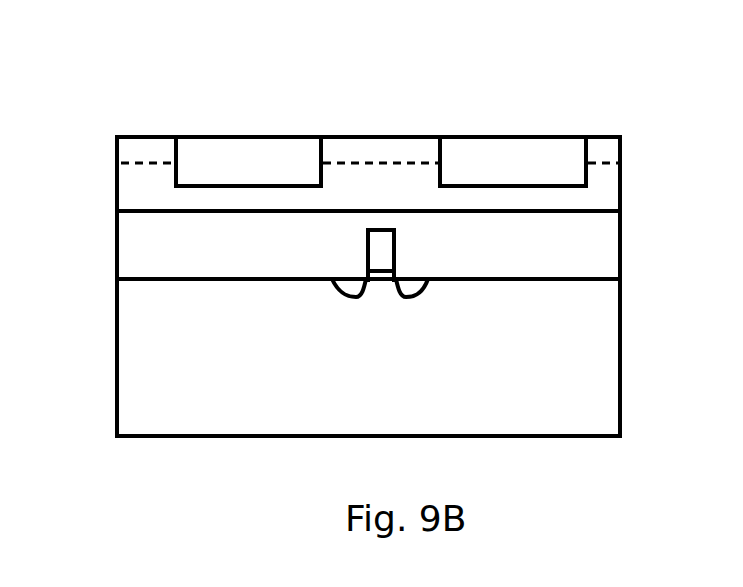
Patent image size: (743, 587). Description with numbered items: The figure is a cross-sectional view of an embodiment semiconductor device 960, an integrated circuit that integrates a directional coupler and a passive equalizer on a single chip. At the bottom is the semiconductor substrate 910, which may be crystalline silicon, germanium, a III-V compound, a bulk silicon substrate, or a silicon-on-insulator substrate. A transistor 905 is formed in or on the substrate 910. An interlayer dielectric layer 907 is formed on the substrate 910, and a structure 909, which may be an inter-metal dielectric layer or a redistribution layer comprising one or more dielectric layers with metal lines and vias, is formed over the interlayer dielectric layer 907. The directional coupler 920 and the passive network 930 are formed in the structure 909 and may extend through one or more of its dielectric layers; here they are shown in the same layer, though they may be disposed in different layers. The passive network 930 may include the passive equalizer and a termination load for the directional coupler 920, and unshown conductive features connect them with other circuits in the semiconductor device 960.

The semiconductor device 960 is at (377, 76).
The structure 909 is at (624, 183).
The interlayer dielectric layer 907 is at (624, 243).
The semiconductor substrate 910 is at (403, 392).
The directional coupler 920 is at (272, 173).
The passive network 930 is at (528, 173).
The transistor 905 is at (402, 249).